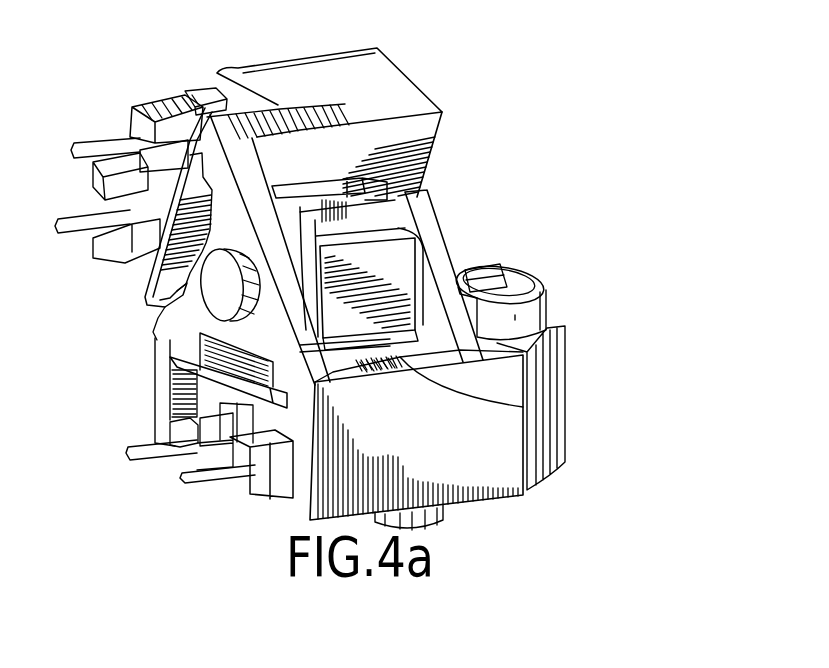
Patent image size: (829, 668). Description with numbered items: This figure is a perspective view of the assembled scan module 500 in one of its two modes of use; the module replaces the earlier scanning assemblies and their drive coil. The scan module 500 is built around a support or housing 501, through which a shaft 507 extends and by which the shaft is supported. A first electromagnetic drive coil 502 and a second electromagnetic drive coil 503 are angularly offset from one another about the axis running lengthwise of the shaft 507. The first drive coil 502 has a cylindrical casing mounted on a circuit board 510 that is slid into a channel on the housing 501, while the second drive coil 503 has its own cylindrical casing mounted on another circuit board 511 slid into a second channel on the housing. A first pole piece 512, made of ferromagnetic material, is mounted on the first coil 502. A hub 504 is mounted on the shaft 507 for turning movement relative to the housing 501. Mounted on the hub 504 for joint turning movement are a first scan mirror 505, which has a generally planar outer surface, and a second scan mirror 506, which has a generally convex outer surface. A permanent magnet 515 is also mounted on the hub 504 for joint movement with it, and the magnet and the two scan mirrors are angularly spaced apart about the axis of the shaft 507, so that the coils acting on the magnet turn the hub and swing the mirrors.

The scan module 500 is at (473, 169).
The housing 501 is at (408, 95).
The first electromagnetic drive coil 502 is at (128, 110).
The second electromagnetic drive coil 503 is at (256, 489).
The hub 504 is at (402, 258).
The first scan mirror 505 is at (400, 260).
The second scan mirror 506 is at (432, 195).
The shaft 507 is at (218, 297).
The circuit board 510 is at (142, 289).
The circuit board 511 is at (182, 373).
The first pole piece 512 is at (198, 88).
The permanent magnet 515 is at (522, 411).